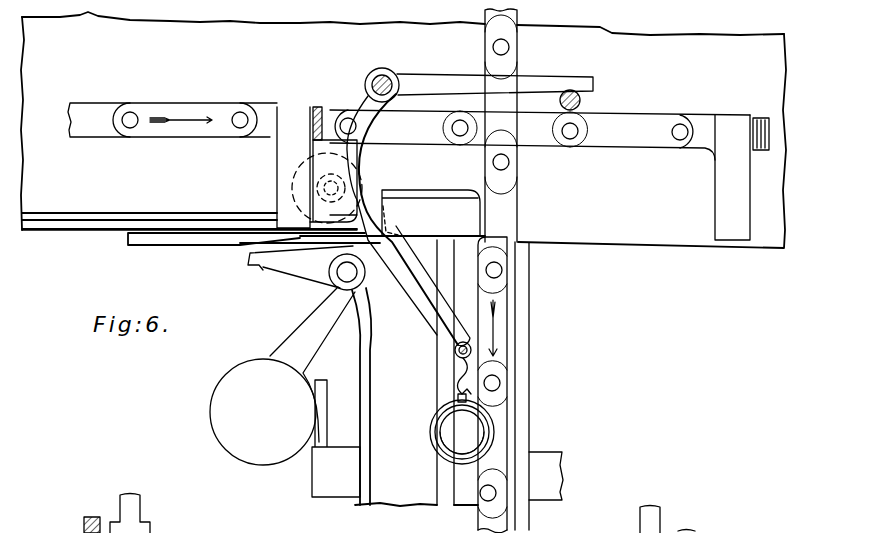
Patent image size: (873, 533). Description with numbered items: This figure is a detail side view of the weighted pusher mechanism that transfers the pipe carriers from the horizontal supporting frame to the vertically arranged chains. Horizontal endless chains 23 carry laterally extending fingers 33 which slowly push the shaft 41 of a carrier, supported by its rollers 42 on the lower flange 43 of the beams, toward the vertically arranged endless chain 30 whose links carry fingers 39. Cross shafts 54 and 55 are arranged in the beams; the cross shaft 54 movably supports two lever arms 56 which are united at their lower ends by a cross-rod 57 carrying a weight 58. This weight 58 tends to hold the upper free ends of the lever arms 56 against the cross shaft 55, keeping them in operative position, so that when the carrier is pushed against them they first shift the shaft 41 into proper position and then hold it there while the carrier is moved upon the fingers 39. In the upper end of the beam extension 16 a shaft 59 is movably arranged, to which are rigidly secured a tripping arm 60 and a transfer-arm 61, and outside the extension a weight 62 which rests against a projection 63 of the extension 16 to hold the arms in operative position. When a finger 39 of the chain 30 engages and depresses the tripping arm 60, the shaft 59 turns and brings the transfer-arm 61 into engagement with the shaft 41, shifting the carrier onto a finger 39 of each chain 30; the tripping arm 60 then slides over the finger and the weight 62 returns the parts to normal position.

The vertically arranged extension 16 is at (395, 497).
The endless chain 23 is at (182, 100).
The endless chain 30 is at (500, 333).
The finger 33 is at (282, 168).
The finger 39 is at (435, 206).
The shaft 41 is at (331, 190).
The roller 42 is at (292, 187).
The flange 43 is at (86, 232).
The cross shaft 54 is at (388, 78).
The cross shaft 55 is at (582, 100).
The lever arm 56 is at (369, 180).
The cross-rod 57 is at (455, 352).
The weight 58 is at (443, 430).
The shaft 59 is at (330, 292).
The tripping arm 60 is at (381, 252).
The transfer-arm 61 is at (295, 270).
The weight 62 is at (212, 410).
The projection 63 is at (322, 437).